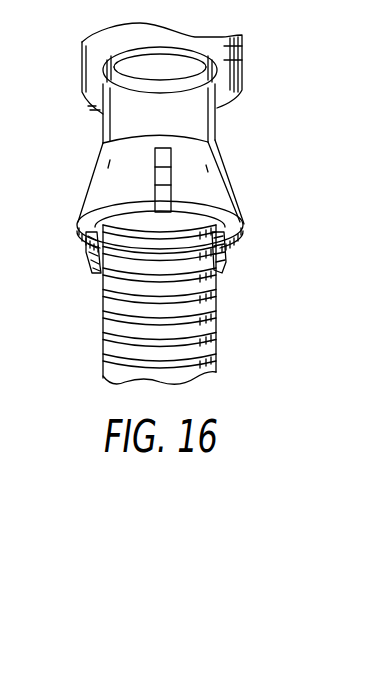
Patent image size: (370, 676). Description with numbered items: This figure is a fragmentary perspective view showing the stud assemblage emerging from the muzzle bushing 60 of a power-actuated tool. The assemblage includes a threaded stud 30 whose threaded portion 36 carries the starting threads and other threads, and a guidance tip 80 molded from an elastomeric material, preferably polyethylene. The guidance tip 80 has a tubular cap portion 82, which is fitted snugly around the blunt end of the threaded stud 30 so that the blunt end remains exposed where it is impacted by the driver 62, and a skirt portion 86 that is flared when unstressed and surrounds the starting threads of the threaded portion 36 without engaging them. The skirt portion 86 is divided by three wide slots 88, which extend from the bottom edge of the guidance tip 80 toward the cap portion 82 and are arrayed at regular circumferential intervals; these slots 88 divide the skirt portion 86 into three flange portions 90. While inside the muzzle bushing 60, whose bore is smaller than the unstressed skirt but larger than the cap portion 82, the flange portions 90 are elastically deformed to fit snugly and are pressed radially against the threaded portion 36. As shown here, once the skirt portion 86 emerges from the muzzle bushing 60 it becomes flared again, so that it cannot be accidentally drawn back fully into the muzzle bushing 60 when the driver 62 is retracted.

The threaded stud 30 is at (240, 300).
The threaded portion 36 is at (218, 347).
The muzzle bushing 60 is at (242, 46).
The driver 62 is at (220, 80).
The guidance tip 80 is at (229, 170).
The cap portion 82 is at (222, 121).
The skirt portion 86 is at (226, 195).
The slots 88 is at (167, 131).
The flange portions 90 is at (237, 236).